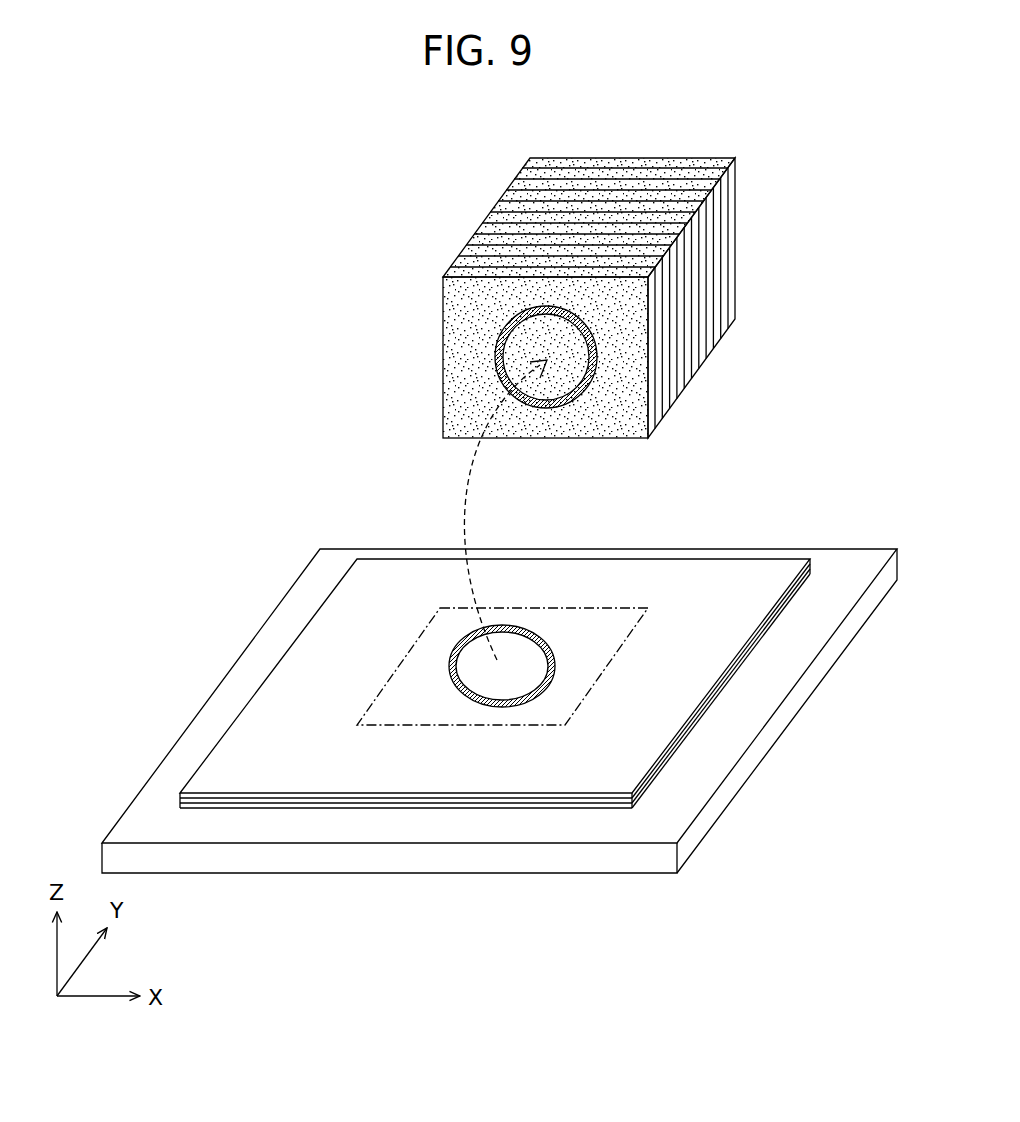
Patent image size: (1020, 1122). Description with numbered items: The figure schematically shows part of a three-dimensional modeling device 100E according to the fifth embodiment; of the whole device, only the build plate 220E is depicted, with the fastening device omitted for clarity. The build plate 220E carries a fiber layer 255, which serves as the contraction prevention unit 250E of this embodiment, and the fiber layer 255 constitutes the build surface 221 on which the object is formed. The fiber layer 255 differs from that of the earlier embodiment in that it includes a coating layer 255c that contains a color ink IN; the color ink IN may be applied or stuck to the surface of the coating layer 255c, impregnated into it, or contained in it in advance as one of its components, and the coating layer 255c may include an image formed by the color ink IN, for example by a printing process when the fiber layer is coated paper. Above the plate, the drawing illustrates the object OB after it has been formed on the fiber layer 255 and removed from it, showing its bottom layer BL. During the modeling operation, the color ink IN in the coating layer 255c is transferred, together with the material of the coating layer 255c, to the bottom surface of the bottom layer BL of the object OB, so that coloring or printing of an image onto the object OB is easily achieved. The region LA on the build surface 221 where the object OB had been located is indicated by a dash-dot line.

The 3D modeling device 100E is at (240, 140).
The object OB is at (531, 298).
The bottom layer BL is at (446, 277).
The color ink IN is at (498, 371).
The region LA is at (578, 608).
The build plate 220E is at (782, 528).
The build surface 221 is at (360, 610).
The coating layer 255c is at (323, 700).
The contraction prevention unit 250E is at (431, 668).
The fiber layer 255 is at (431, 668).